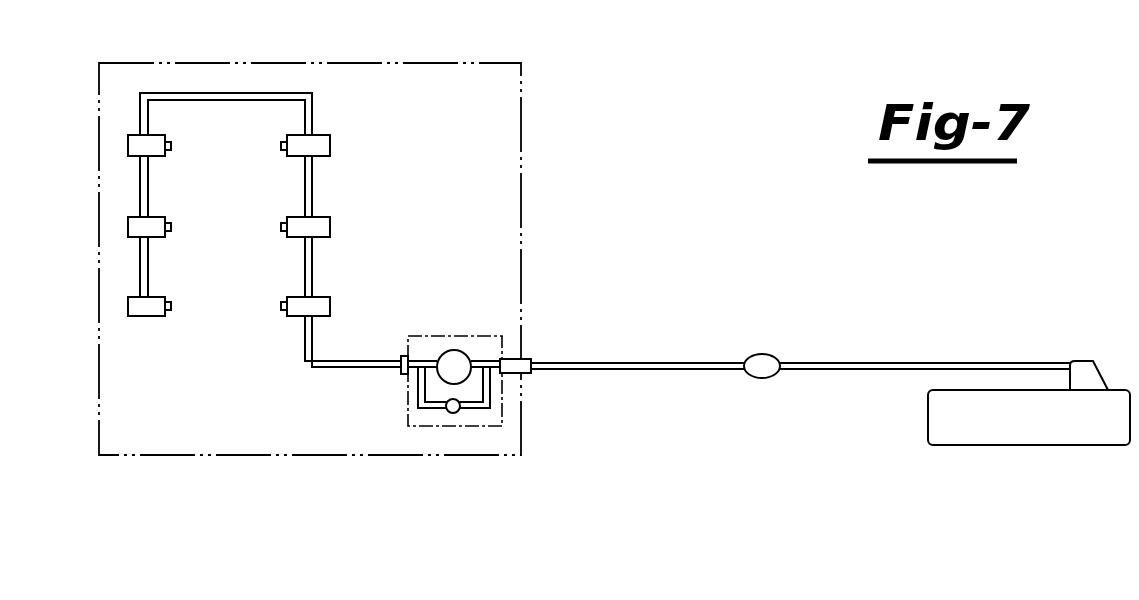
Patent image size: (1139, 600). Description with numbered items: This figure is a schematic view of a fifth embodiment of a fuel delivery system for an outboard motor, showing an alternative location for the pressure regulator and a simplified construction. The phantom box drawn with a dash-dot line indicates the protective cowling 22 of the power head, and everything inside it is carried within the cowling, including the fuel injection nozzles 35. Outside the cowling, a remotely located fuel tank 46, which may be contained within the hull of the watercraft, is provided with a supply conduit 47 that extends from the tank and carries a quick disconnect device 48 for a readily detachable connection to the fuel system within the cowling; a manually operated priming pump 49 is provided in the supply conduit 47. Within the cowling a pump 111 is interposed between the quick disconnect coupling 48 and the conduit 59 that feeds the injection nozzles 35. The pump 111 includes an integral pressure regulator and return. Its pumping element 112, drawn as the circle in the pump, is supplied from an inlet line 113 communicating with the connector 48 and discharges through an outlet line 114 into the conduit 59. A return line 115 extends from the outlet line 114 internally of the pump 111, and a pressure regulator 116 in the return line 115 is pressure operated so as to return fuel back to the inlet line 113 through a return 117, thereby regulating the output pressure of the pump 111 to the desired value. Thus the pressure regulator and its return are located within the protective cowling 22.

The protective cowling 22 is at (521, 102).
The conduit 59 is at (313, 101).
The fuel injection nozzles 35 is at (330, 148).
The pump 111 is at (462, 330).
The pump 112 is at (445, 373).
The inlet line 113 is at (483, 361).
The outlet line 114 is at (432, 356).
The return line 115 is at (418, 391).
The pressure regulator 116 is at (448, 413).
The return 117 is at (483, 413).
The quick disconnect device 48 is at (525, 375).
The supply conduit 47 is at (680, 371).
The manually operated priming pump 49 is at (763, 379).
The fuel tank 46 is at (972, 433).